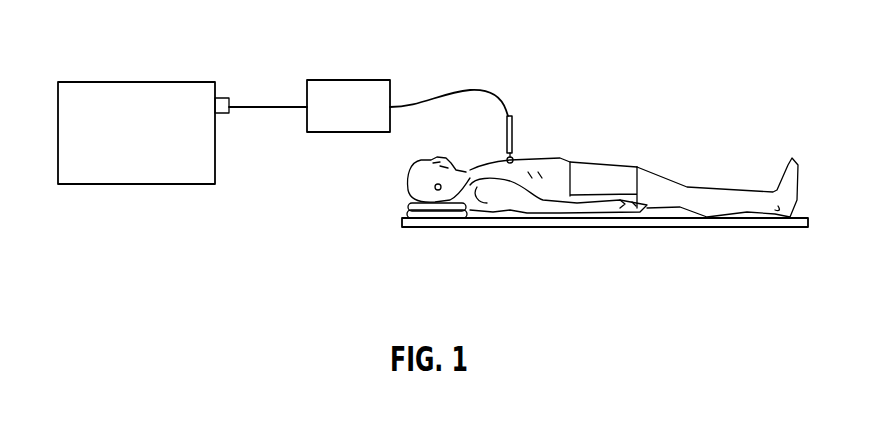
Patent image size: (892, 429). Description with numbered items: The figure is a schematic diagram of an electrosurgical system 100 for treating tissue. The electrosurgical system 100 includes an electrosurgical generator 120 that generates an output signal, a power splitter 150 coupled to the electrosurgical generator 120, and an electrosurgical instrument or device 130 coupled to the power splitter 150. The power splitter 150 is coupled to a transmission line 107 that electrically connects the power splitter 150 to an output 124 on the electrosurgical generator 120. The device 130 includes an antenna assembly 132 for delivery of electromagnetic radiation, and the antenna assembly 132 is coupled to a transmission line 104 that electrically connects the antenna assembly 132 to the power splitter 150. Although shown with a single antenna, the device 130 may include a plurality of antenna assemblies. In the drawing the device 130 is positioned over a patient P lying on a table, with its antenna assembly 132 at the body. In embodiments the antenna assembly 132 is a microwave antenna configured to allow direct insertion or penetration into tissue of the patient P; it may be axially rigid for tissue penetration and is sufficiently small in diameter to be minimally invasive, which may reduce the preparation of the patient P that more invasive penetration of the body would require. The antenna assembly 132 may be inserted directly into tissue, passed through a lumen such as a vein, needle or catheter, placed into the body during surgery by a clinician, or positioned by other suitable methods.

The electrosurgical system 100 is at (635, 53).
The electrosurgical generator 120 is at (128, 78).
The output 124 is at (222, 115).
The transmission line 107 is at (292, 106).
The power splitter 150 is at (350, 80).
The transmission line 104 is at (482, 90).
The electrosurgical instrument or device 130 is at (513, 125).
The antenna assembly 132 is at (515, 157).
The patient P is at (667, 136).